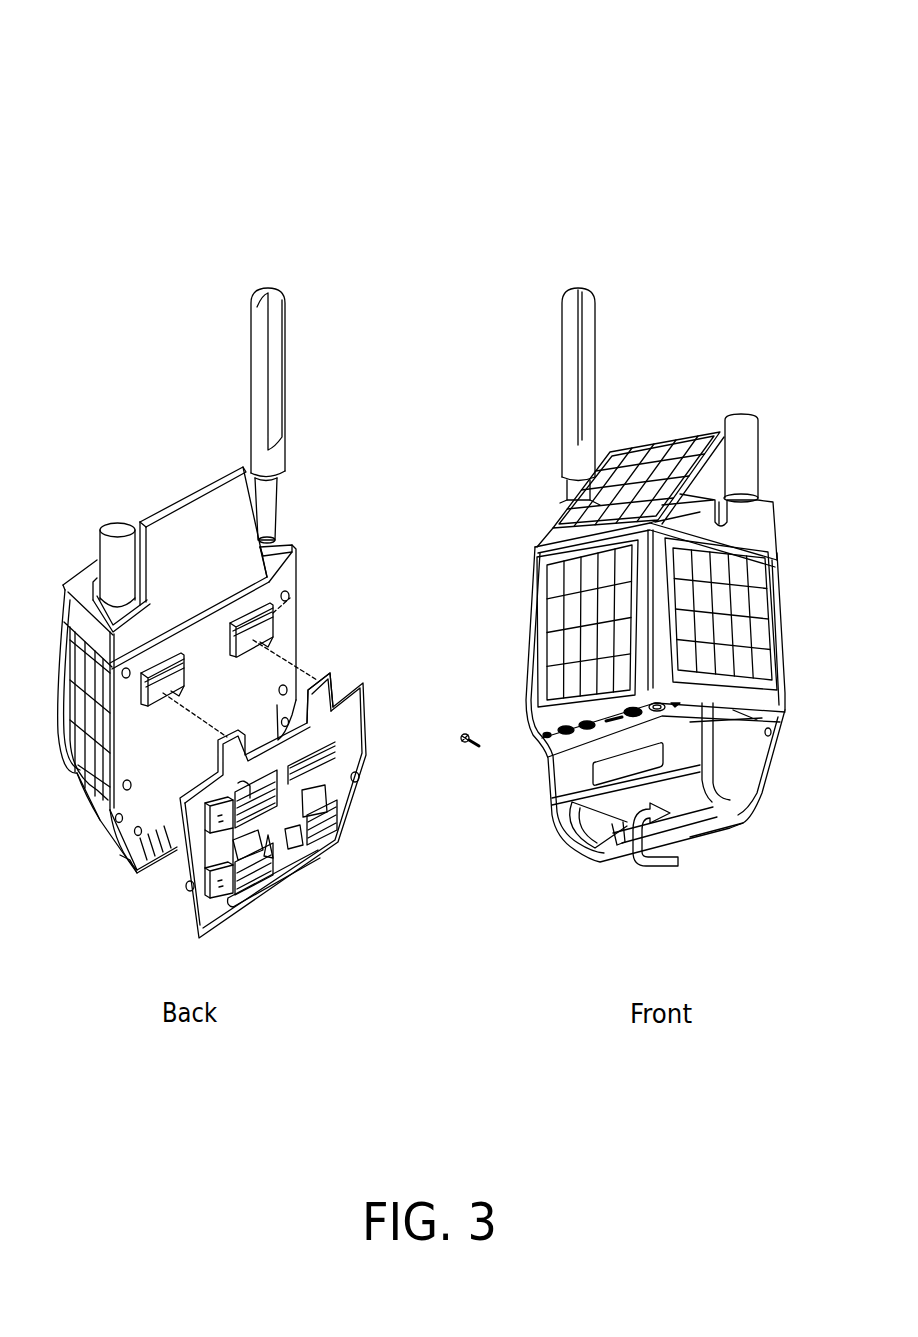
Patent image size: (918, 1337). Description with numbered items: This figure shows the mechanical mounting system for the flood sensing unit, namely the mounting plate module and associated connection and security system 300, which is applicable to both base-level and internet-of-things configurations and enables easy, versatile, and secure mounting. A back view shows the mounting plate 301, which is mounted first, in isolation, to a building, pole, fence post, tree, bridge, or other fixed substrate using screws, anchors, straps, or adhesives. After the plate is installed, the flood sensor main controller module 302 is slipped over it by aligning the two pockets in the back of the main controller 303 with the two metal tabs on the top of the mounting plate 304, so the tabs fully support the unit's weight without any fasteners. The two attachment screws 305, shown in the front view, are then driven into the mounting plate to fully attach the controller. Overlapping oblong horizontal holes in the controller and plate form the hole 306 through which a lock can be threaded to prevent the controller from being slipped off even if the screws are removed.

The mounting plate module and associated connection and security system 300 is at (427, 143).
The mounting plate 301 is at (368, 680).
The flood sensor main controller module 302 is at (168, 492).
The pockets in the back of the main controller 303 is at (280, 612).
The metal tabs on the top of the mounting plate 304 is at (328, 668).
The attachment screws 305 is at (542, 768).
The hole 306 is at (628, 863).